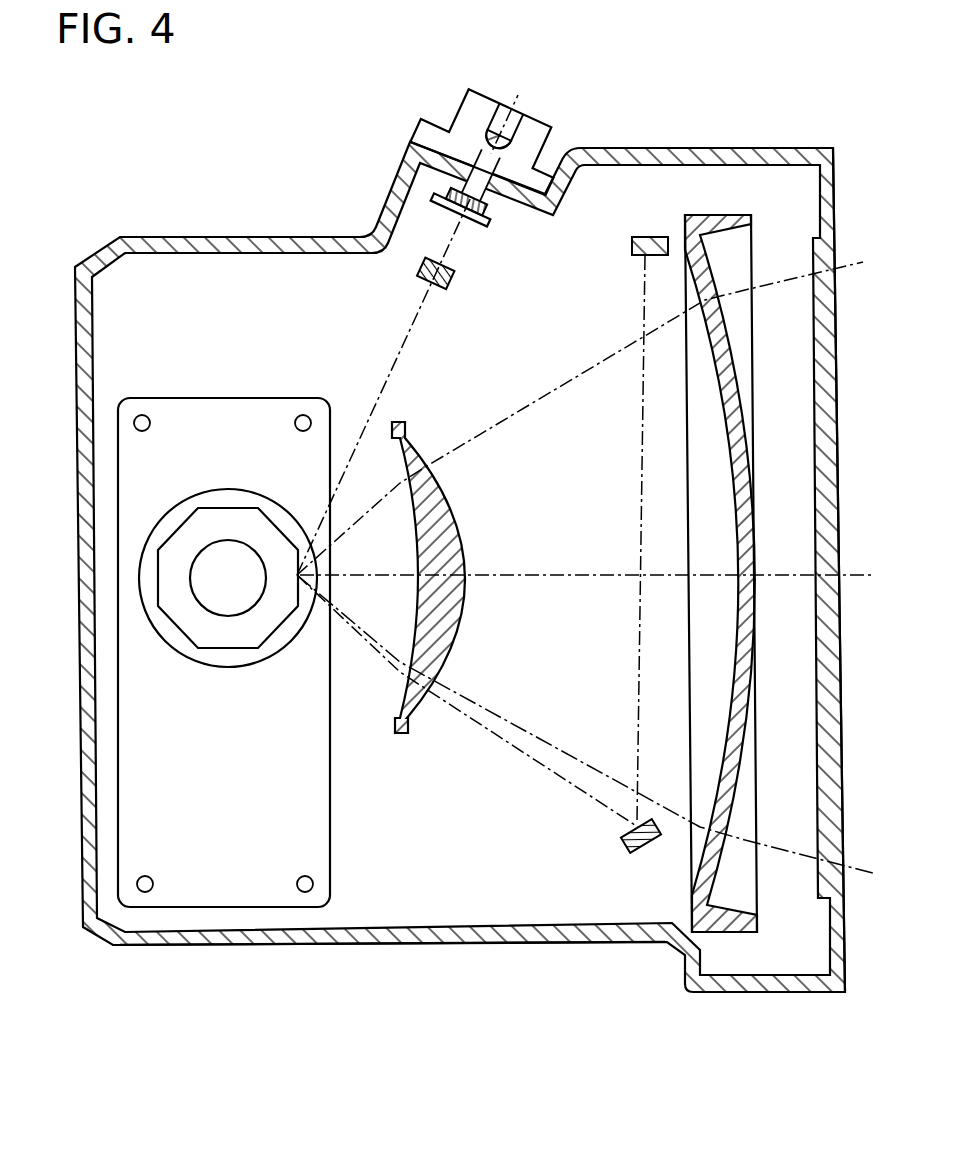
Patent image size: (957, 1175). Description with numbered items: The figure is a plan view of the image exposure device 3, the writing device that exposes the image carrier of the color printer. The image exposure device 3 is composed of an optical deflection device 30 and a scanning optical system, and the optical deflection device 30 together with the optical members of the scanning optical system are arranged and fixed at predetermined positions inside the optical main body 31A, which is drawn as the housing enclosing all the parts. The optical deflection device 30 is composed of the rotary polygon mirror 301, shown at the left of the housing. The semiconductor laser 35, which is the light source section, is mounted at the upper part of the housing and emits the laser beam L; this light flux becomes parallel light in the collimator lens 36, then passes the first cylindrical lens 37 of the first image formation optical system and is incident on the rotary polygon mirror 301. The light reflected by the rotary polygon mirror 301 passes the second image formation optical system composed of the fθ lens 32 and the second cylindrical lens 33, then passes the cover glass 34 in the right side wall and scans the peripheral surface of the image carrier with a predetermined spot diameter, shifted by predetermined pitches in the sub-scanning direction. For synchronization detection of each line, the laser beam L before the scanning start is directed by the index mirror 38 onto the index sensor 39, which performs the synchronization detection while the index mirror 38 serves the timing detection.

The image exposure device 3 is at (240, 236).
The optical deflection device 30 is at (226, 397).
The rotary polygon mirror 301 is at (232, 507).
The optical main body 31A is at (400, 947).
The fθ lens 32 is at (400, 736).
The second cylindrical lens 33 is at (691, 915).
The cover glass 34 is at (845, 770).
The semiconductor laser 35 is at (503, 135).
The collimator lens 36 is at (490, 208).
The first cylindrical lens 37 is at (458, 279).
The index mirror 38 is at (624, 846).
The index sensor 39 is at (648, 236).
The laser beam L is at (401, 357).